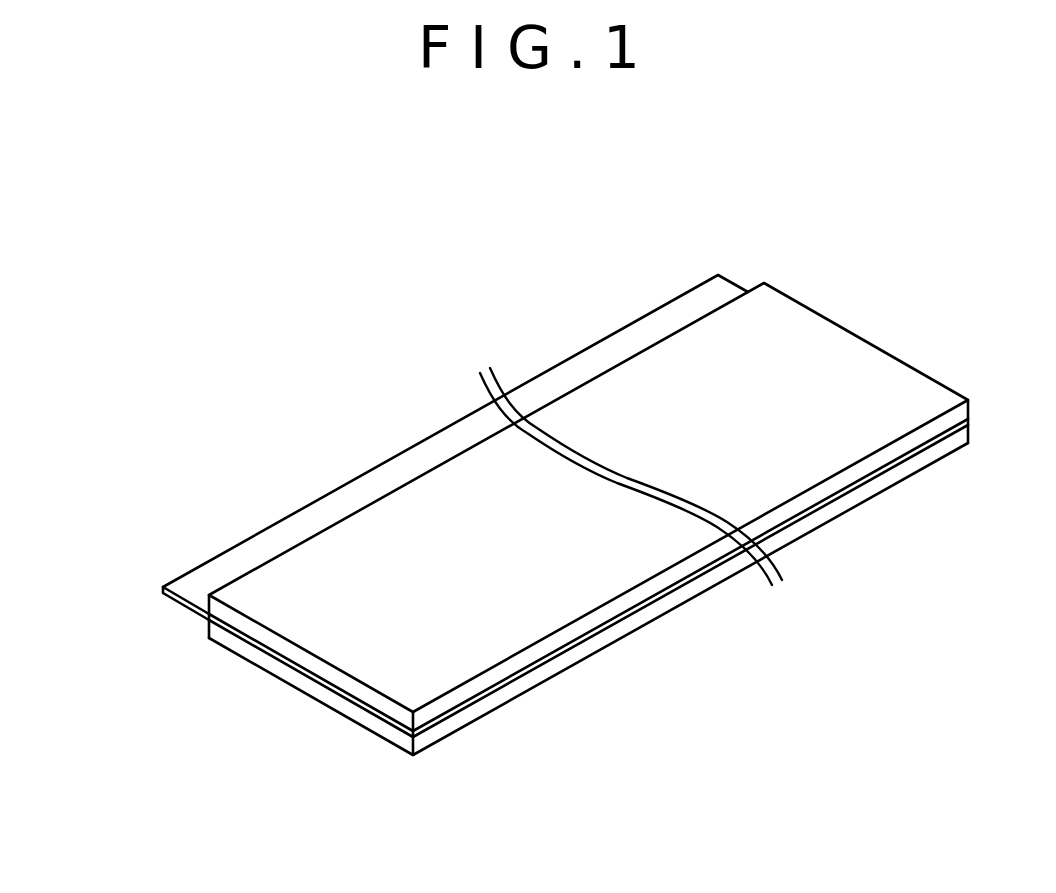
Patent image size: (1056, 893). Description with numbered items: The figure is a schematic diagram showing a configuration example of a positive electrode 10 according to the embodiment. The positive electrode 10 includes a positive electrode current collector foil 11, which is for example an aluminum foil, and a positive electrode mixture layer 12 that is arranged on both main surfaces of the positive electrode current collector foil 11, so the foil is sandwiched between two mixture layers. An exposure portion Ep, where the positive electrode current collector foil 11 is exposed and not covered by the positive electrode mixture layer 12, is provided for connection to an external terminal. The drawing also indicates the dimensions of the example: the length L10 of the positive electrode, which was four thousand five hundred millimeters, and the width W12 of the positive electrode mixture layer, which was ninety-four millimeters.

The positive electrode 10 is at (507, 518).
The positive electrode current collector foil 11 is at (511, 506).
The positive electrode mixture layer 12 is at (280, 643).
The exposure portion Ep is at (607, 357).
The width of positive electrode mixture layer W12 is at (1002, 381).
The length of positive electrode L10 is at (477, 790).